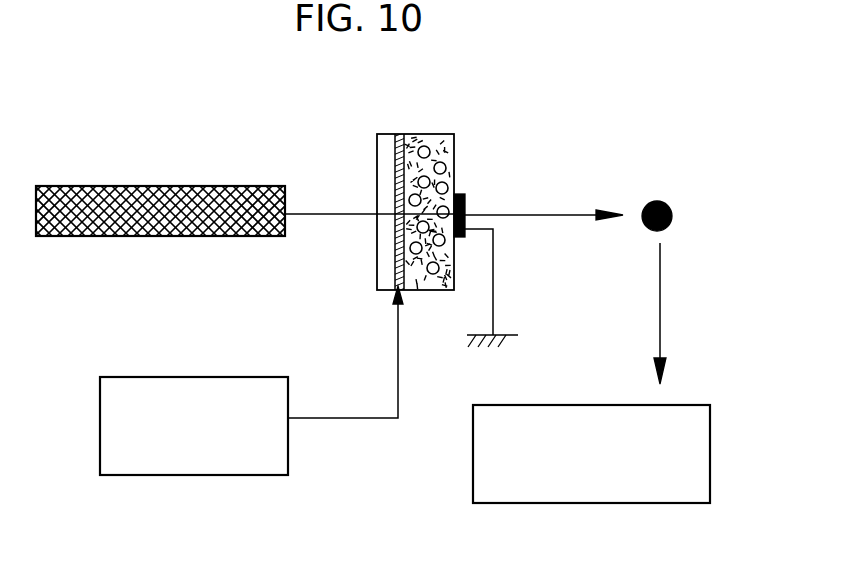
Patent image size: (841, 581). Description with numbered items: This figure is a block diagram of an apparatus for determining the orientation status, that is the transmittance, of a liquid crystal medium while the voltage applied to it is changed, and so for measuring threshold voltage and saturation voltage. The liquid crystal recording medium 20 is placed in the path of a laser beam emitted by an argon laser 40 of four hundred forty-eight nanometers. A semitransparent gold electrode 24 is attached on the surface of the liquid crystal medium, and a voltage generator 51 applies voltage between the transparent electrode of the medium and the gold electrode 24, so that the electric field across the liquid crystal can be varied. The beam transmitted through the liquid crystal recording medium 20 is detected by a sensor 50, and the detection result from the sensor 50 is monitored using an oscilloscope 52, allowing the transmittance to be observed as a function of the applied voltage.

The argon laser 40 is at (163, 188).
The liquid crystal recording medium 20 is at (403, 196).
The gold electrode 24 is at (483, 201).
The sensor 50 is at (678, 201).
The voltage generator 51 is at (230, 380).
The oscilloscope 52 is at (600, 434).